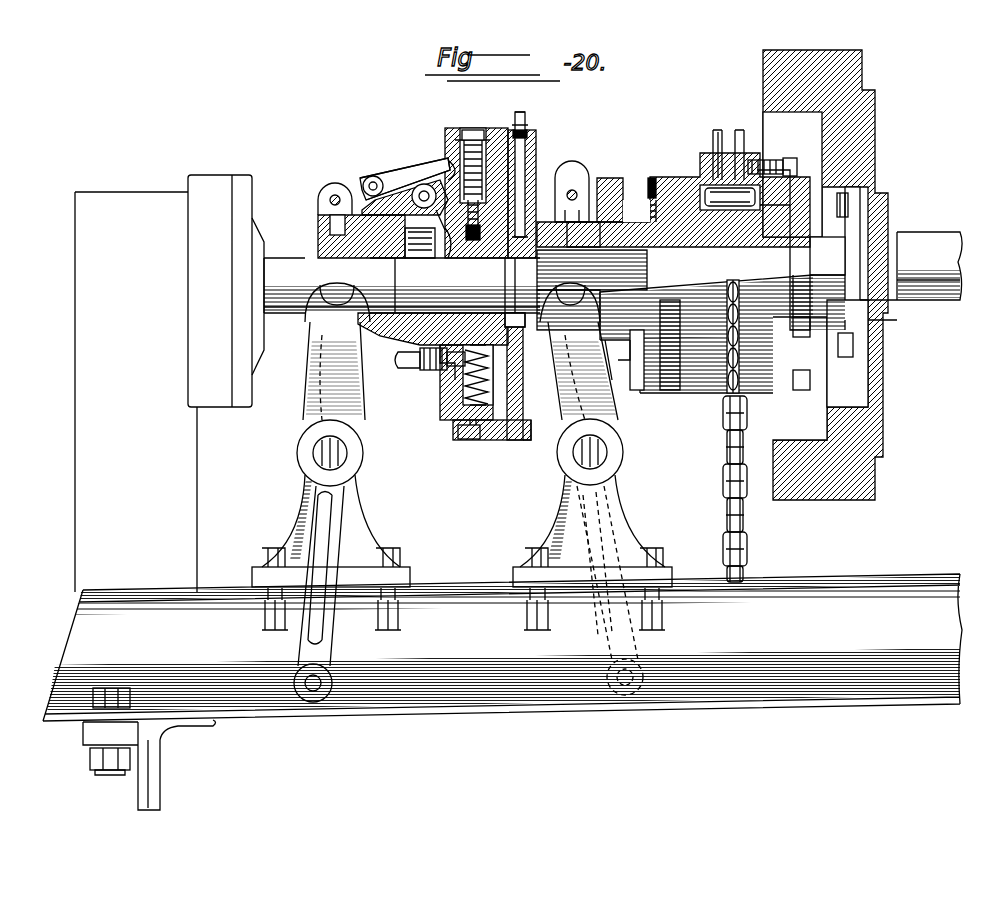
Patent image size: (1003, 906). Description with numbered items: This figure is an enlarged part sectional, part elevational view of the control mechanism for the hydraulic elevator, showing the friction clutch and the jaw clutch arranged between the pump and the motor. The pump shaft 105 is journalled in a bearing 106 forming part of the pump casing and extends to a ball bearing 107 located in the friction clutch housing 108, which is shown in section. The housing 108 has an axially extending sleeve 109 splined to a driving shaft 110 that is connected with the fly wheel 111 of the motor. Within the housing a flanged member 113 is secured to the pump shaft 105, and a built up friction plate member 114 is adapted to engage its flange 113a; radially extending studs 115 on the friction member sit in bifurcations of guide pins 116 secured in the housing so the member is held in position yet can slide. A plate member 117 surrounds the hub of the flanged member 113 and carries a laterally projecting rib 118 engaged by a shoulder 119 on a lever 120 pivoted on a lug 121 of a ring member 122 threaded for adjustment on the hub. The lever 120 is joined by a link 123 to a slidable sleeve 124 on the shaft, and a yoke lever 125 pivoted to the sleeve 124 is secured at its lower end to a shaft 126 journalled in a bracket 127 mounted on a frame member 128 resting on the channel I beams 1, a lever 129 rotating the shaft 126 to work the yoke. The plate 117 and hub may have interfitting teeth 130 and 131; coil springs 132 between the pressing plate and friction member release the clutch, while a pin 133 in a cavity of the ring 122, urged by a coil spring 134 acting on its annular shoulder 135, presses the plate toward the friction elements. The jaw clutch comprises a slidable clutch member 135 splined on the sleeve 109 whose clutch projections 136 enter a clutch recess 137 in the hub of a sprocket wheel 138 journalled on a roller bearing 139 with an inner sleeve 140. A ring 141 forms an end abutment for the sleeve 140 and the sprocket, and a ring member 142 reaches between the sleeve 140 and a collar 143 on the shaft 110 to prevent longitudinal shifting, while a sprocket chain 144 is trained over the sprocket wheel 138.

The angle bracket 1 is at (155, 773).
The pump shaft 105 is at (268, 275).
The bearing 106 is at (152, 205).
The ball bearing 107 is at (518, 330).
The friction clutch housing 108 is at (487, 128).
The sleeve 109 is at (586, 225).
The driving shaft 110 is at (826, 250).
The fly wheel 111 is at (840, 92).
The flanged member 113 is at (514, 200).
The flange 113a is at (524, 134).
The friction plate member 114 is at (468, 422).
The studs 115 is at (460, 160).
The guide pins 116 is at (468, 130).
The plate member 117 is at (458, 402).
The rib 118 is at (446, 384).
The shoulder 119 is at (448, 178).
The lever 120 is at (392, 176).
The lug 121 is at (385, 198).
The ring member 122 is at (400, 258).
The link 123 is at (402, 213).
The slidable sleeve 124 is at (352, 258).
The yoke lever 125 is at (328, 342).
The shaft 126 is at (332, 456).
The bracket 127 is at (372, 538).
The frame member 128 is at (510, 680).
The lever 129 is at (302, 646).
The interfitting teeth 130 is at (398, 360).
The interfitting teeth 131 is at (446, 232).
The coil springs 132 is at (492, 366).
The pin 133 is at (447, 372).
The coil spring 134 is at (420, 364).
The slidable clutch member 135 is at (635, 348).
The clutch projections 136 is at (648, 348).
The clutch recess 137 is at (668, 348).
The sprocket wheel 138 is at (676, 180).
The roller bearing 139 is at (736, 196).
The inner sleeve 140 is at (780, 194).
The ring 141 is at (636, 222).
The ring member 142 is at (792, 178).
The collar 143 is at (806, 293).
The sprocket chain 144 is at (752, 522).